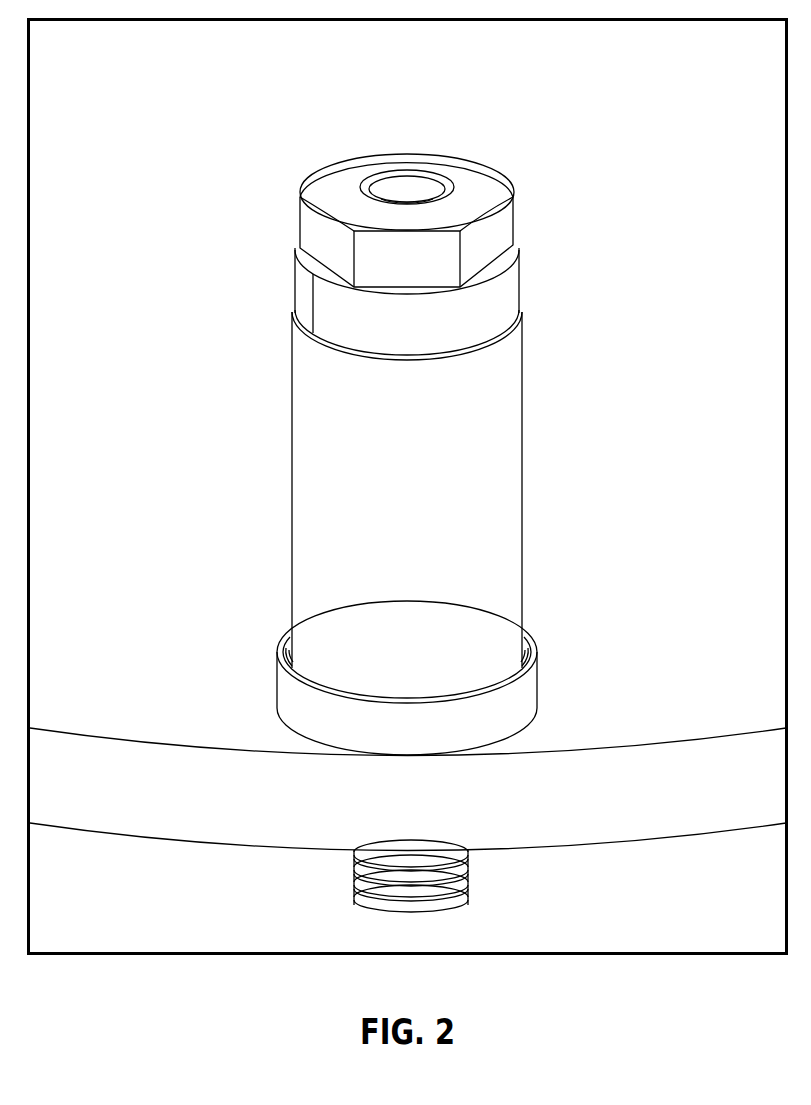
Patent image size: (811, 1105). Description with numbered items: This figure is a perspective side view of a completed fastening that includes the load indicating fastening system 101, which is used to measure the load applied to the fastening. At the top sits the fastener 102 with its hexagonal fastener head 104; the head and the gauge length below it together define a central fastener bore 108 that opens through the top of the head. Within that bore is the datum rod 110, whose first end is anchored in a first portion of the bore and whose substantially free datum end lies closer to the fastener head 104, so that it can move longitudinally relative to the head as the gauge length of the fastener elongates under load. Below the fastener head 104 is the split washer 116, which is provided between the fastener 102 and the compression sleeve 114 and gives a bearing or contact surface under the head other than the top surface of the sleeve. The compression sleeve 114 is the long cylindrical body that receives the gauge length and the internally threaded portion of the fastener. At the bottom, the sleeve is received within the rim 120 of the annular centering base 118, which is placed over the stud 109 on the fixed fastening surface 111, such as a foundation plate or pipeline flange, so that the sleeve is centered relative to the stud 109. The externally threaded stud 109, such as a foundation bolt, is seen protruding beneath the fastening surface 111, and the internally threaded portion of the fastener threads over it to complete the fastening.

The load indicating fastening system 101 is at (230, 136).
The fastener 102 is at (490, 192).
The fastener head 104 is at (502, 228).
The central fastener bore 108 is at (383, 187).
The stud 109 is at (468, 868).
The datum rod 110 is at (407, 202).
The fixed fastening surface 111 is at (179, 505).
The compression sleeve 114 is at (507, 500).
The split washer 116 is at (508, 297).
The annular centering base 118 is at (523, 693).
The rim 120 is at (523, 653).